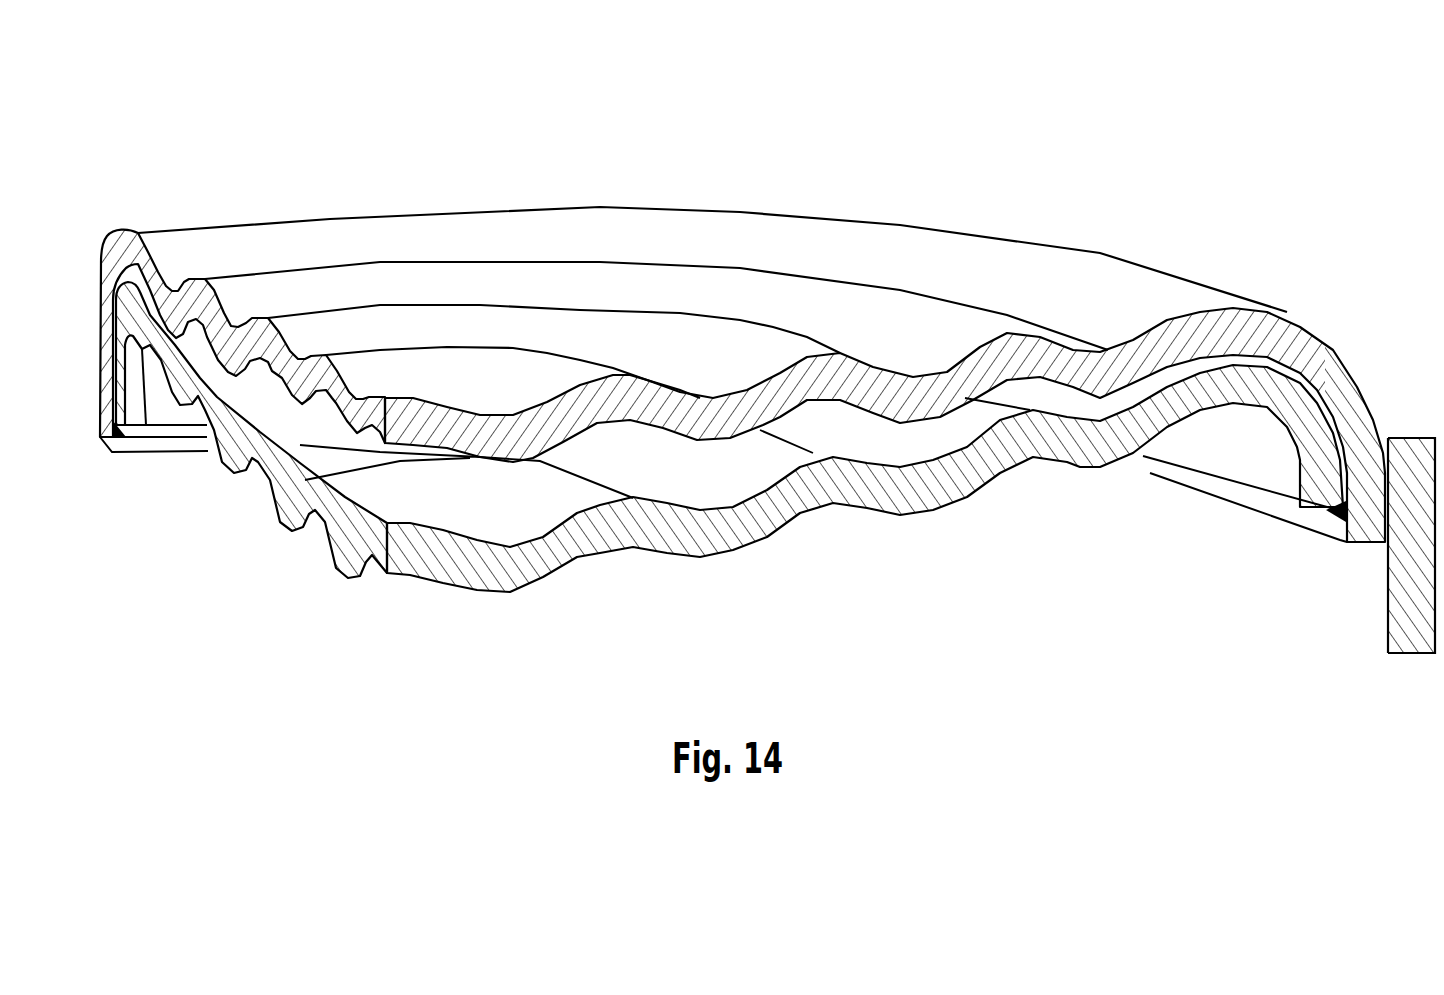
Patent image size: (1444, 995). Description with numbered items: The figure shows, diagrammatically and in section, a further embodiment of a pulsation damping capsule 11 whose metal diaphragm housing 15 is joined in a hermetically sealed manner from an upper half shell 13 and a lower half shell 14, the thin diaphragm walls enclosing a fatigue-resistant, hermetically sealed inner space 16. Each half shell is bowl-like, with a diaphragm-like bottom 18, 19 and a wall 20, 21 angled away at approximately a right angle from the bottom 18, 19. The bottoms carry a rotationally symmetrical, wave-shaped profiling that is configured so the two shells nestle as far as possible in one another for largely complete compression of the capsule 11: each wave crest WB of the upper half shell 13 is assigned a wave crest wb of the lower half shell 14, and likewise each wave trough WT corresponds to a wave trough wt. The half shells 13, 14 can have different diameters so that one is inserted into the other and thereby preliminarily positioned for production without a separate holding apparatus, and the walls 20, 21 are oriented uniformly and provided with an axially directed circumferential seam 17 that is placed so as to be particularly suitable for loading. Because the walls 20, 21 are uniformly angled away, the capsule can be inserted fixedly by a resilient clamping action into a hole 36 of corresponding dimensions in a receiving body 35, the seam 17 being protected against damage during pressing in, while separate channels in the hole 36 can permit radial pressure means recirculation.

The pulsation damping capsule 11 is at (553, 182).
The upper half shell 13 is at (316, 214).
The lower half shell 14 is at (290, 530).
The metal diaphragm housing 15 is at (201, 185).
The inner space 16 is at (465, 513).
The circumferential seam 17 is at (1332, 515).
The bottom of upper half shell 18 is at (1205, 340).
The bottom of lower half shell 19 is at (1193, 405).
The wall of upper half shell 20 is at (1358, 407).
The wall of lower half shell 21 is at (1320, 447).
The receiving body 35 is at (1405, 617).
The hole 36 is at (1386, 597).
The wave trough of upper half shell WT is at (913, 373).
The wave crest of upper half shell WB is at (1007, 330).
The wave trough of lower half shell wt is at (925, 460).
The wave crest of lower half shell wb is at (1050, 400).